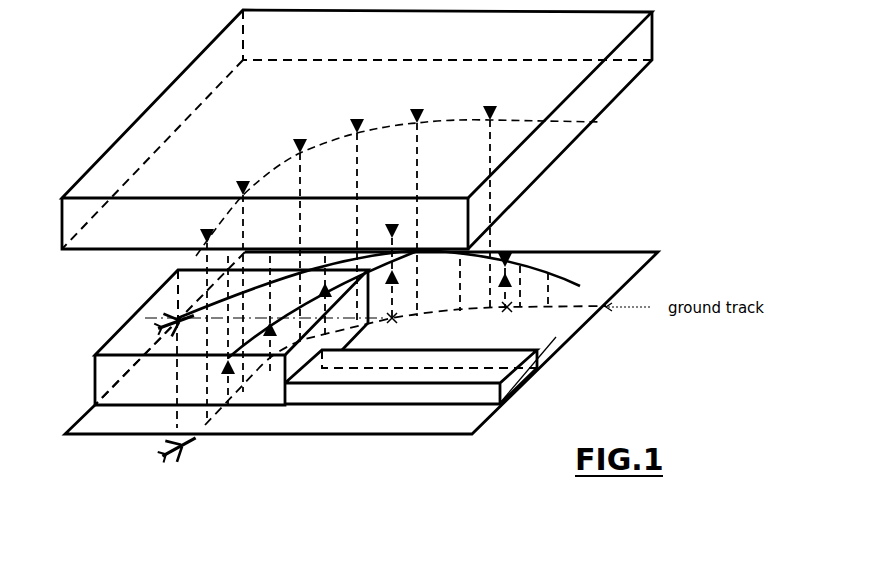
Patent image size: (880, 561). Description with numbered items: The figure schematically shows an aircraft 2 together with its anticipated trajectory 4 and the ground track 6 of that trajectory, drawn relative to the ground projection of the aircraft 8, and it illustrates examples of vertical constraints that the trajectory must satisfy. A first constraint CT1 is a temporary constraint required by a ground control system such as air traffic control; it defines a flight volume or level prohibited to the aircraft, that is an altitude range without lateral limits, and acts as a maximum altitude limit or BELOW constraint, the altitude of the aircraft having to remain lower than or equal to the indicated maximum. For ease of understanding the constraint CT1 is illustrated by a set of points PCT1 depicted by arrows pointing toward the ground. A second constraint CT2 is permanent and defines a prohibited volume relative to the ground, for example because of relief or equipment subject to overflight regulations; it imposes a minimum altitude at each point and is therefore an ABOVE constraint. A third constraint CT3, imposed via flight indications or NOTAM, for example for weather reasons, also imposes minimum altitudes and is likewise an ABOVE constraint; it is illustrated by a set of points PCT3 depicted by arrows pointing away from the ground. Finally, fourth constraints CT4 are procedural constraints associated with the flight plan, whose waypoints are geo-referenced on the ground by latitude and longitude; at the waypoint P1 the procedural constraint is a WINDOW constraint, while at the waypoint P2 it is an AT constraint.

The aircraft 2 is at (165, 312).
The anticipated trajectory 4 is at (584, 285).
The ground track 6 is at (205, 430).
The ground projection of the aircraft 8 is at (176, 460).
The first constraint CT1 is at (603, 121).
The second constraint CT2 is at (562, 350).
The third constraint CT3 is at (251, 410).
The fourth constraints CT4 is at (417, 234).
The set of points PCT1 is at (494, 105).
The set of points PCT3 is at (278, 328).
The waypoint P1 is at (401, 328).
The waypoint P2 is at (512, 322).